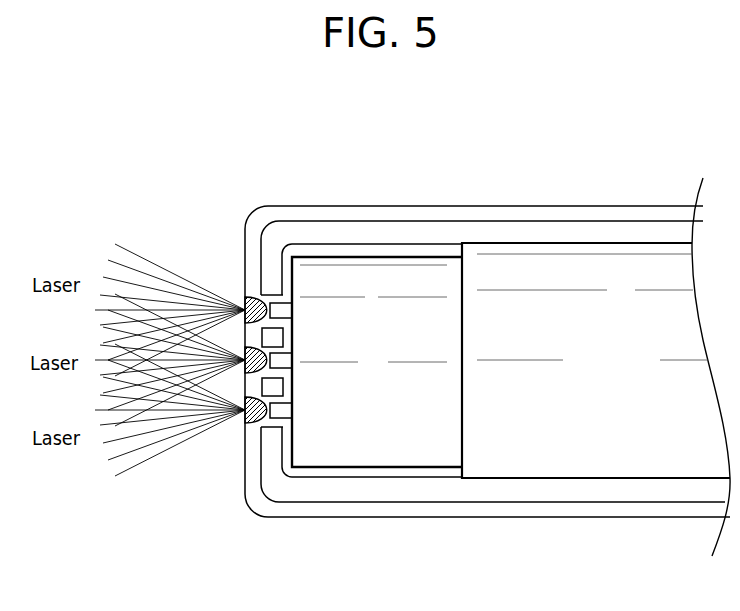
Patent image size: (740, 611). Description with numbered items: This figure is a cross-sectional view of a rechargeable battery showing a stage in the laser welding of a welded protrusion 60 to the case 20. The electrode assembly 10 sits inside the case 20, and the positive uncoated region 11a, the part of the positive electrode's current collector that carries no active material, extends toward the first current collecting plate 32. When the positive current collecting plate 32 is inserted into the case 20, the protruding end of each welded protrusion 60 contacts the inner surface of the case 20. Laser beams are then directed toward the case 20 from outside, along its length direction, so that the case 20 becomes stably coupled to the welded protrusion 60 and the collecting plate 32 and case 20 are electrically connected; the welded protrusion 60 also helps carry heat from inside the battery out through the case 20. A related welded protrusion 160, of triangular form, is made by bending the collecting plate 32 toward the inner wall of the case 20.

The electrode assembly 10 is at (637, 450).
The positive uncoated region 11a is at (417, 440).
The case 20 is at (523, 504).
The first current collecting plate 32 is at (332, 470).
The welded protrusion 60 is at (273, 295).
The welded protrusion 160 is at (275, 427).